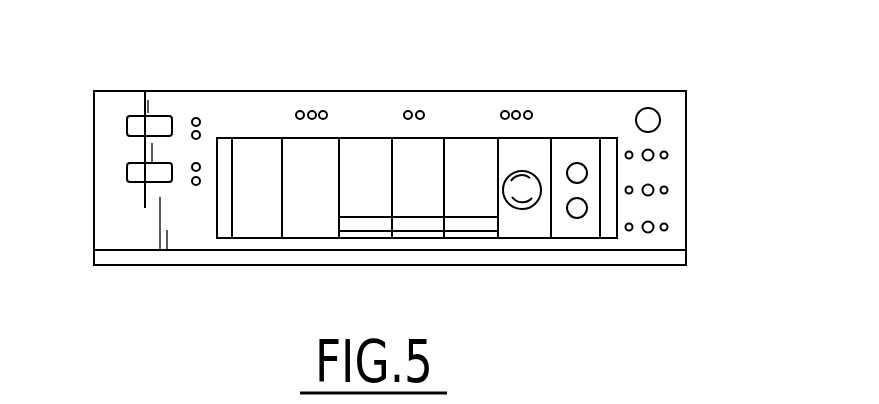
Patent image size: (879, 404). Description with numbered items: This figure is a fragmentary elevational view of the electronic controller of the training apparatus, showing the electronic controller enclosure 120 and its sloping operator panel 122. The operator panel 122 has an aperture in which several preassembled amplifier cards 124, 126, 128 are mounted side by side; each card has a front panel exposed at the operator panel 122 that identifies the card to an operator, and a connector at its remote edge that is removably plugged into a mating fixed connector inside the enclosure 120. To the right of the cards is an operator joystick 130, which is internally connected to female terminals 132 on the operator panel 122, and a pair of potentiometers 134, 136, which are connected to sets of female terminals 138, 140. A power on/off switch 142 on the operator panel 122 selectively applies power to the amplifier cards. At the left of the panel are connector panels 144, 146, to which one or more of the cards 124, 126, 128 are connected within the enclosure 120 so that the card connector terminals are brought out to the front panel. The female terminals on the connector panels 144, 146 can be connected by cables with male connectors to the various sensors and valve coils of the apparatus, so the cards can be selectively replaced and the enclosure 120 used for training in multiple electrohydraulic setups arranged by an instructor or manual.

The electronic controller enclosure 120 is at (343, 178).
The sloping operator panel 122 is at (349, 276).
The amplifier card 124 is at (384, 128).
The amplifier card 126 is at (437, 142).
The amplifier card 128 is at (498, 127).
The operator joystick 130 is at (567, 128).
The female terminals 132 is at (705, 124).
The potentiometer 134 is at (626, 139).
The potentiometer 136 is at (546, 256).
The set of female terminals 138 is at (705, 168).
The set of female terminals 140 is at (707, 207).
The power on/off switch 142 is at (709, 88).
The connector panel 144 is at (199, 144).
The connector panel 146 is at (317, 138).